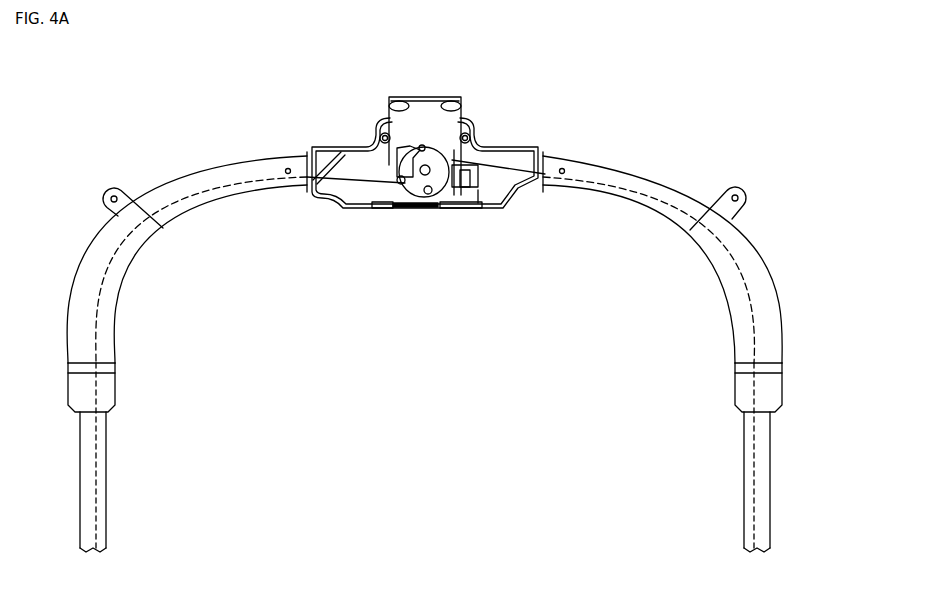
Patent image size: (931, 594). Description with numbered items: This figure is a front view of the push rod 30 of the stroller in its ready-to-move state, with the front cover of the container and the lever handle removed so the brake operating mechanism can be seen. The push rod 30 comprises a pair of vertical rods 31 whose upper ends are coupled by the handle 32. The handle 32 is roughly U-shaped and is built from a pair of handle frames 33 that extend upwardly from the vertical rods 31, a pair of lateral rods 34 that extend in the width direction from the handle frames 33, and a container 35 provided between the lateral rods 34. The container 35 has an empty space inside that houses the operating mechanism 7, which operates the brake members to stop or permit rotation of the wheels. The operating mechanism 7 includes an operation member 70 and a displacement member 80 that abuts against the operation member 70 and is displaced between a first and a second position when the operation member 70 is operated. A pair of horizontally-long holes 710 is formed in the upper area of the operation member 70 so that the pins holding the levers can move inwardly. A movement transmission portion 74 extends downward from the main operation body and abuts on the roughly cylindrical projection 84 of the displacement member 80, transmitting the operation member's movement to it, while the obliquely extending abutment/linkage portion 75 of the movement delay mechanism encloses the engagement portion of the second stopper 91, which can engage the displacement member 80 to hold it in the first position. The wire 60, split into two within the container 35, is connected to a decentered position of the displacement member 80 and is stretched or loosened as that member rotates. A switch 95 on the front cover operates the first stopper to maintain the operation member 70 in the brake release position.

The operating mechanism 7 is at (424, 131).
The operation member 70 is at (416, 86).
The horizontally-long holes 710 is at (397, 97).
The movement transmission portion 74 is at (368, 122).
The abutment/linkage portion 75 is at (456, 178).
The displacement member 80 is at (440, 195).
The projection 84 is at (397, 197).
The second stopper 91 is at (482, 185).
The switch 95 is at (415, 213).
The push rod 30 is at (450, 335).
The vertical rods 31 is at (85, 484).
The handle 32 is at (424, 240).
The handle frames 33 is at (128, 267).
The lateral rods 34 is at (233, 177).
The container 35 is at (425, 201).
The wire 60 is at (103, 291).